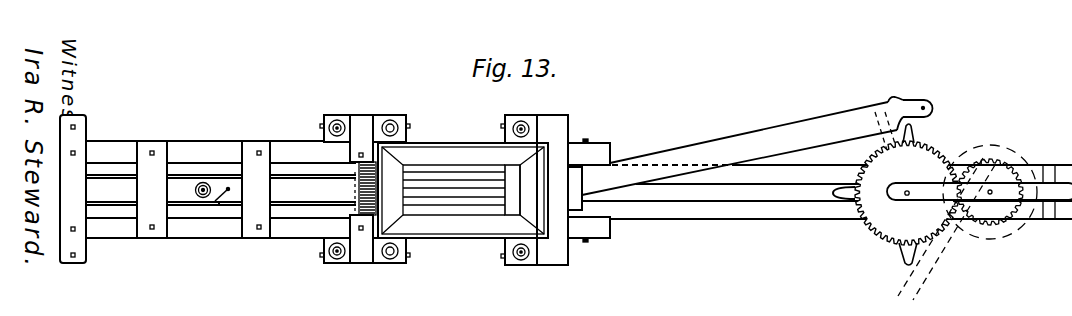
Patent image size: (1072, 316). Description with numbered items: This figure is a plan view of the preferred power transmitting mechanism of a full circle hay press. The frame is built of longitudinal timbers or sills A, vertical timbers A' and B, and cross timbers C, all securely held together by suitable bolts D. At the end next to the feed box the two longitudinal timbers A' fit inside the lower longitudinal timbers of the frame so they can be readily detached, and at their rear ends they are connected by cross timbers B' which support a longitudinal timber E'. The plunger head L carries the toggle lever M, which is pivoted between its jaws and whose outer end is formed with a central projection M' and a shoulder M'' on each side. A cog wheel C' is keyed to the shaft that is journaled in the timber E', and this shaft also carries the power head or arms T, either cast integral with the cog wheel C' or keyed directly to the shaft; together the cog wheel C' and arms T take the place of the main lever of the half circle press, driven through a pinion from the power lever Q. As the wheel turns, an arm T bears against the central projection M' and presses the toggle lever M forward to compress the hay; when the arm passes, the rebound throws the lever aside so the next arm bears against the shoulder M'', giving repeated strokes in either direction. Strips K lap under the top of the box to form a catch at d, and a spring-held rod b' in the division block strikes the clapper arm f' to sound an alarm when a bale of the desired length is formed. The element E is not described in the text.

The longitudinal timbers or sills A is at (579, 177).
The vertical timbers A' is at (203, 189).
The vertical timbers B is at (418, 187).
The cross timbers B' is at (194, 192).
The cross timbers C is at (327, 196).
The cog wheel C' is at (907, 193).
The bolts D is at (44, 229).
The box casing E is at (463, 179).
The longitudinal timber E' is at (979, 191).
The strips K is at (377, 194).
The plunger head L is at (512, 203).
The toggle lever M is at (735, 156).
The central projection M' is at (930, 108).
The shoulder M'' is at (897, 131).
The power head or arms T is at (899, 198).
The power lever Q is at (947, 268).
The top catch d is at (354, 188).
The arm f' is at (221, 181).
The rod b' is at (227, 220).